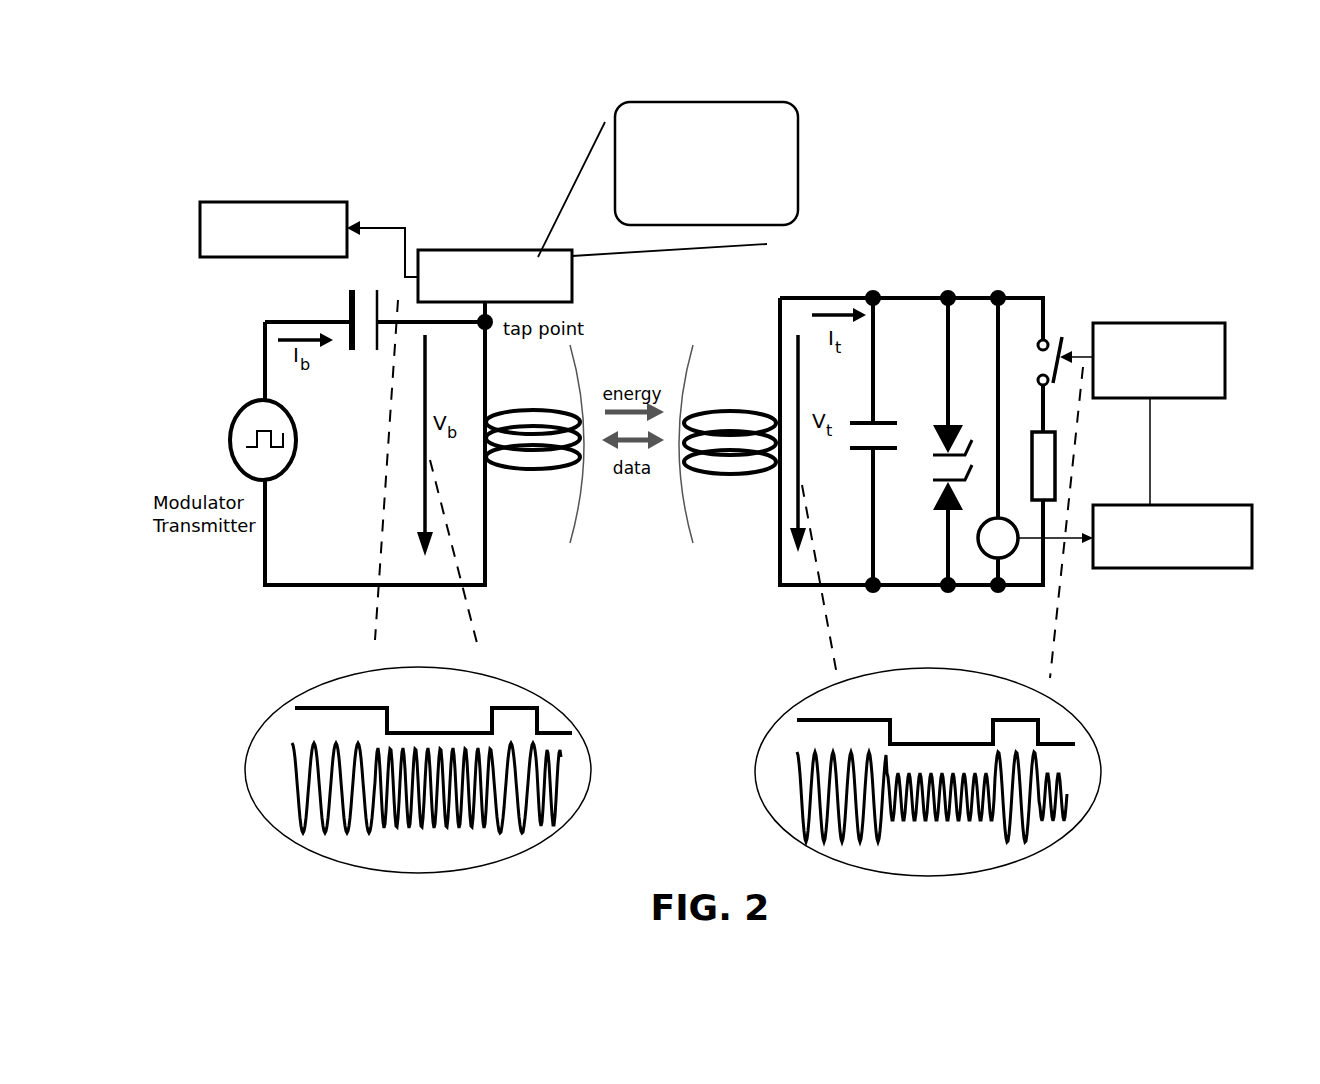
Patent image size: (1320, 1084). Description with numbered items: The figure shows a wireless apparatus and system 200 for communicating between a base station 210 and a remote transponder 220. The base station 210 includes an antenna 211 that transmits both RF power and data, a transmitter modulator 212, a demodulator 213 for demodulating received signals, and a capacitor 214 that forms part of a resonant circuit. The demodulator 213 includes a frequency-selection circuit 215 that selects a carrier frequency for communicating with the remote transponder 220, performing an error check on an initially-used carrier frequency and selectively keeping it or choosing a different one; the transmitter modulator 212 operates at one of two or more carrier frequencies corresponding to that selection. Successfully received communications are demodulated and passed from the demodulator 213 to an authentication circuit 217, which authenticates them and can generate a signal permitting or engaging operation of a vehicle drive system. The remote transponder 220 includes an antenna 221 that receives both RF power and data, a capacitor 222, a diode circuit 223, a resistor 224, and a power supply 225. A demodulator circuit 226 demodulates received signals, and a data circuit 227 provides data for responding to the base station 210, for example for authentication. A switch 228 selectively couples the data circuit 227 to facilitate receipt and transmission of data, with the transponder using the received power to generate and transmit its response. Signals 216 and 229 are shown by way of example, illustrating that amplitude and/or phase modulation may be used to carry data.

The wireless apparatus and system 200 is at (1183, 110).
The base station 210 is at (493, 204).
The antenna 211 is at (530, 403).
The transmitter modulator 212 is at (285, 412).
The demodulator 213 is at (473, 250).
The capacitor 214 is at (350, 290).
The frequency-selection circuit 215 is at (773, 102).
The signal 216 is at (545, 690).
The authentication circuit 217 is at (236, 200).
The remote transponder 220 is at (1061, 202).
The antenna 221 is at (717, 403).
The capacitor 222 is at (888, 420).
The diode circuit 223 is at (945, 515).
The resistor 224 is at (1058, 440).
The power supply 225 is at (1005, 558).
The demodulator circuit 226 is at (1195, 505).
The data circuit 227 is at (1180, 323).
The switch 228 is at (1048, 338).
The signal 229 is at (1075, 718).